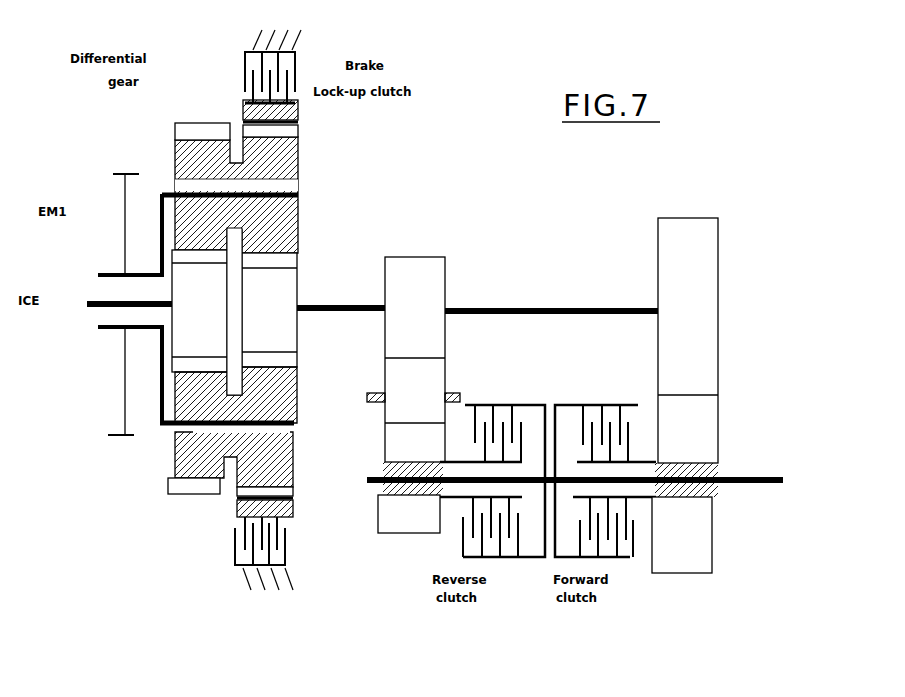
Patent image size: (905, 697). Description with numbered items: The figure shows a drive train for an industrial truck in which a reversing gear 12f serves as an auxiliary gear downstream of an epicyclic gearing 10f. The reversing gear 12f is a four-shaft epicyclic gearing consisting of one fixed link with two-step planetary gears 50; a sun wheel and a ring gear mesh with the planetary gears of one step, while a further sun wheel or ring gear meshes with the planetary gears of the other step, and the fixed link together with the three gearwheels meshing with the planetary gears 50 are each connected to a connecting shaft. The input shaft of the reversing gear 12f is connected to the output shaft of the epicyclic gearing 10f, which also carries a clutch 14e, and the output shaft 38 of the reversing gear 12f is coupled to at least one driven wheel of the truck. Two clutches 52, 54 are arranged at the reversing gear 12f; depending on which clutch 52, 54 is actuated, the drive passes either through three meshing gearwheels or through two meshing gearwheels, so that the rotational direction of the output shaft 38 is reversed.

The epicyclic gearing 10f is at (244, 337).
The reversing gear 12f is at (575, 445).
The clutch 14e is at (312, 553).
The two-step planetary gears 50 is at (300, 155).
The clutch 52 is at (490, 398).
The clutch 54 is at (583, 400).
The output shaft 38 is at (750, 470).